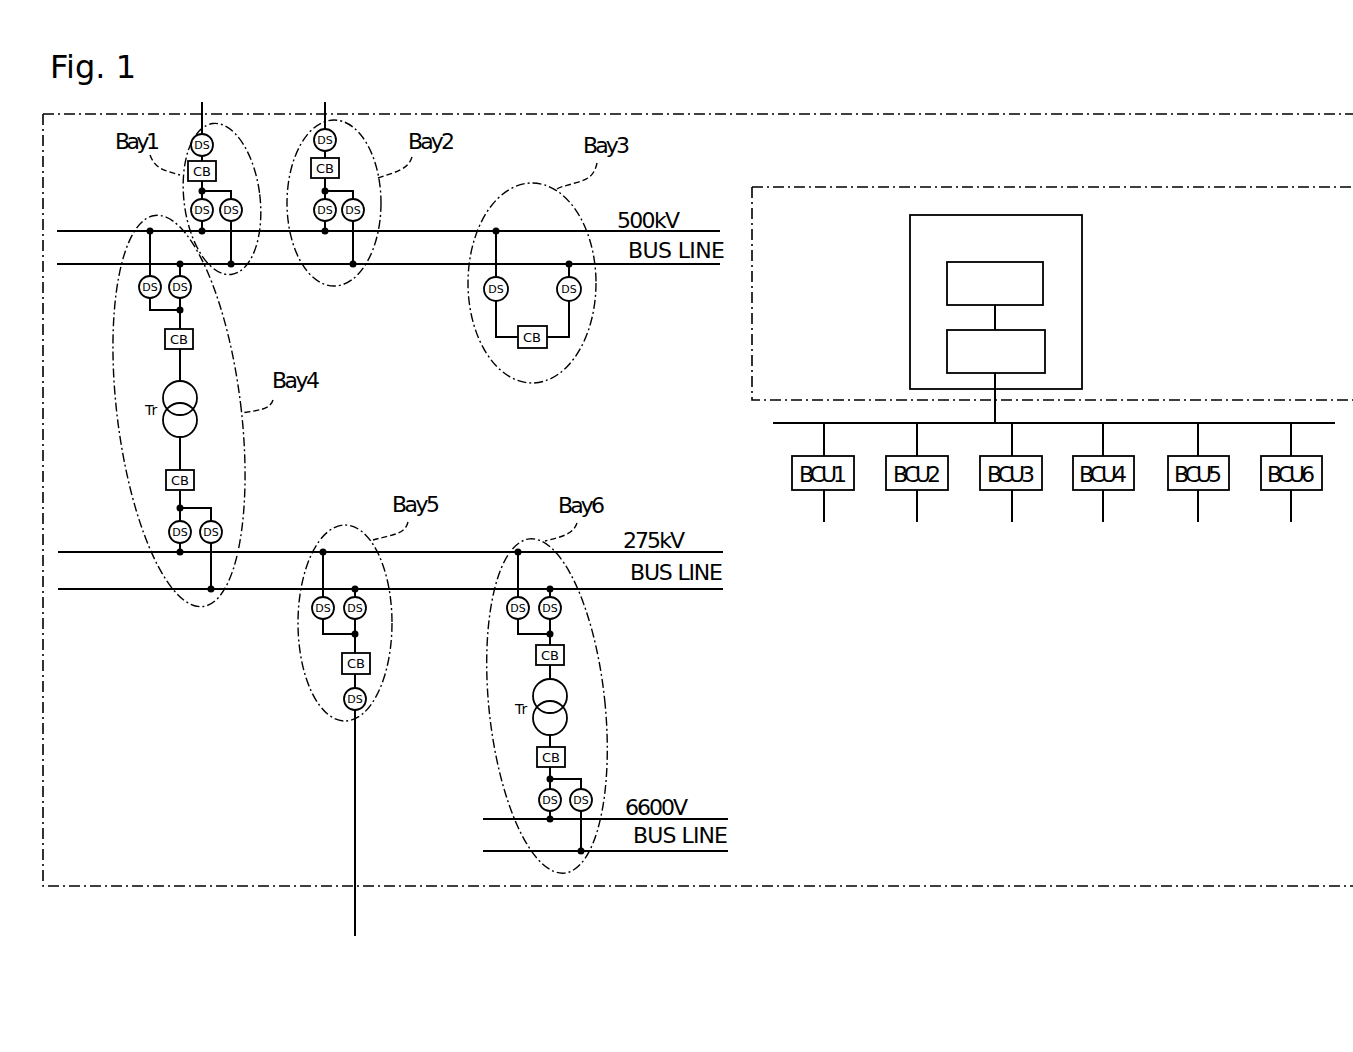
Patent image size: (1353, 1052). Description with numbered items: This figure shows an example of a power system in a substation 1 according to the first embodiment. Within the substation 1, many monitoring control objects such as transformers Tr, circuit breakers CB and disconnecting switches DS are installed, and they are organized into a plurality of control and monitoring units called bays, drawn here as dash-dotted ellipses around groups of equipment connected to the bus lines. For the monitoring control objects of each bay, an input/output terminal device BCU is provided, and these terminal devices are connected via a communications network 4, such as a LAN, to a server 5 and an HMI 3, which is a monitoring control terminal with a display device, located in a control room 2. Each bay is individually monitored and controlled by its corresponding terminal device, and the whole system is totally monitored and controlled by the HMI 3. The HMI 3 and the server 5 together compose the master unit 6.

The substation 1 is at (975, 887).
The control room 2 is at (857, 187).
The HMI 3 is at (1045, 283).
The communications network 4 is at (1165, 422).
The server 5 is at (1045, 350).
The master unit 6 is at (910, 283).